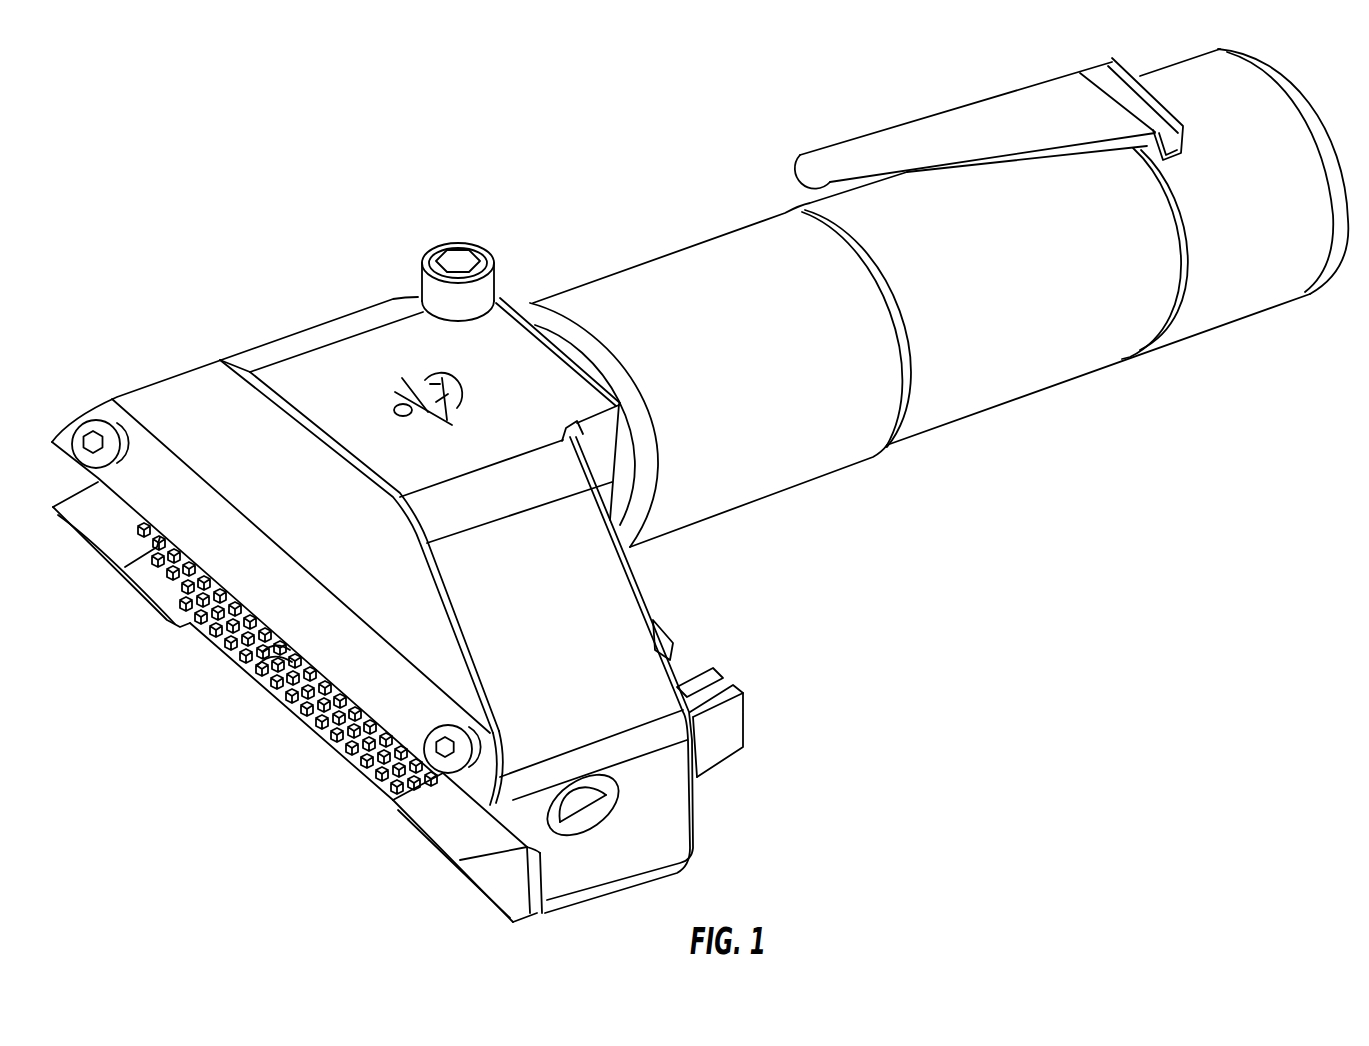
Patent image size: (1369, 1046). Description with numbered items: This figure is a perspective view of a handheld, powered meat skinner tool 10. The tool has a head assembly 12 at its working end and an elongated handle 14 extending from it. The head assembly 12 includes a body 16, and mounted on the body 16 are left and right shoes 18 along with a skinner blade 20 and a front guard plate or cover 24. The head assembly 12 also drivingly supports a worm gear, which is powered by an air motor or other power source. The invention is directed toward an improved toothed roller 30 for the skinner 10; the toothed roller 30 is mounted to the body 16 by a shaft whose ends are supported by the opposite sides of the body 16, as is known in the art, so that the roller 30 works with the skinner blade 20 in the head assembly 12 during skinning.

The meat skinner tool 10 is at (549, 122).
The head assembly 12 is at (360, 305).
The handle 14 is at (1027, 392).
The body 16 is at (603, 593).
The left and right shoes 18 is at (130, 588).
The skinner blade 20 is at (340, 750).
The front guard plate 24 is at (178, 373).
The toothed roller 30 is at (248, 686).